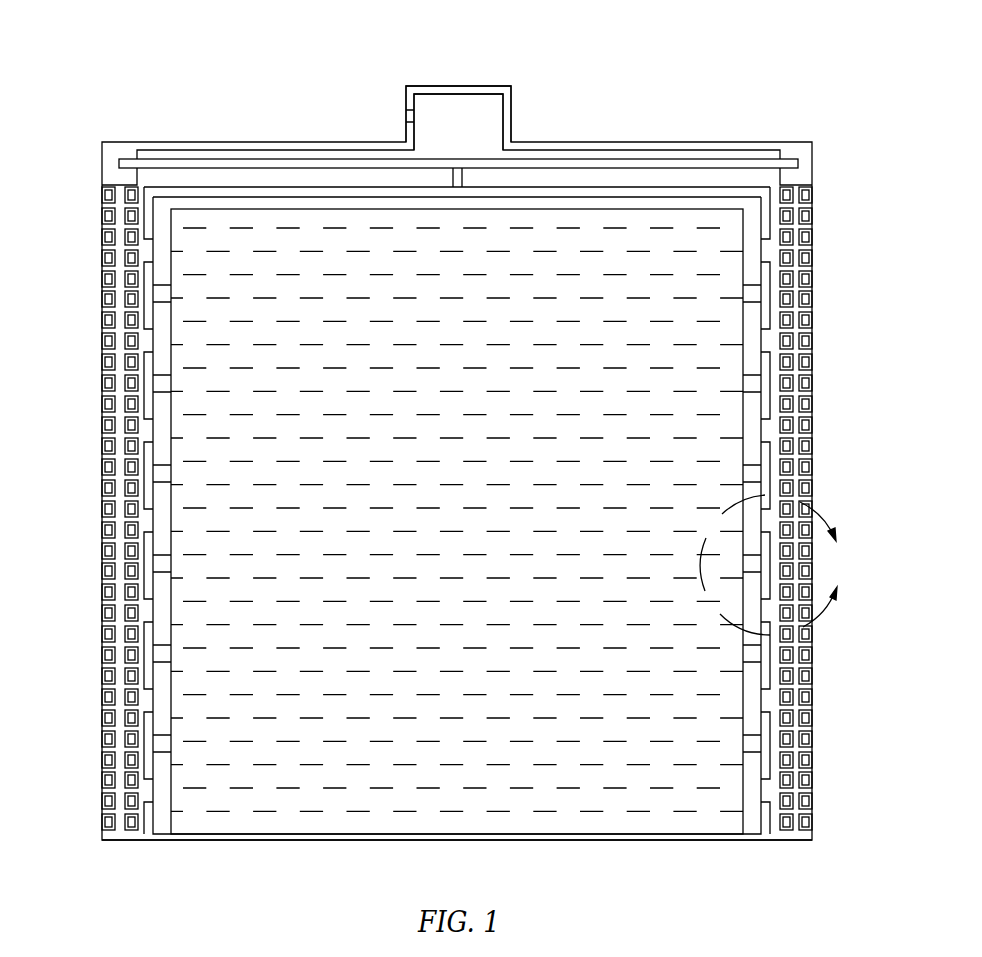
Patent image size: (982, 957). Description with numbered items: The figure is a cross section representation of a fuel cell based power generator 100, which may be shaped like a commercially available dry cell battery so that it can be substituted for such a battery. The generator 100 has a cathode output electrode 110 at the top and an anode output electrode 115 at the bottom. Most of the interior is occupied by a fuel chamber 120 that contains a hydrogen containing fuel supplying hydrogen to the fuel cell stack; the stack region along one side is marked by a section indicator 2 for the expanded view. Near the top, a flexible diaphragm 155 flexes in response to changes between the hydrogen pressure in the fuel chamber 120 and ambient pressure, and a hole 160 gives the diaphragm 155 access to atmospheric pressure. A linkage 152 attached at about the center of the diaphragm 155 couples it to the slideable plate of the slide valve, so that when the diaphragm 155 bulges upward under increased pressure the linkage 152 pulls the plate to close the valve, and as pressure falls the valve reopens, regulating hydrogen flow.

The fuel cell based power generator 100 is at (734, 46).
The cathode output electrode 110 is at (458, 86).
The anode output electrode 115 is at (458, 841).
The fuel chamber 120 is at (610, 803).
The linkage 152 is at (458, 170).
The flexible diaphragm 155 is at (568, 160).
The hole 160 is at (405, 113).
The section view indicator 2 is at (771, 565).